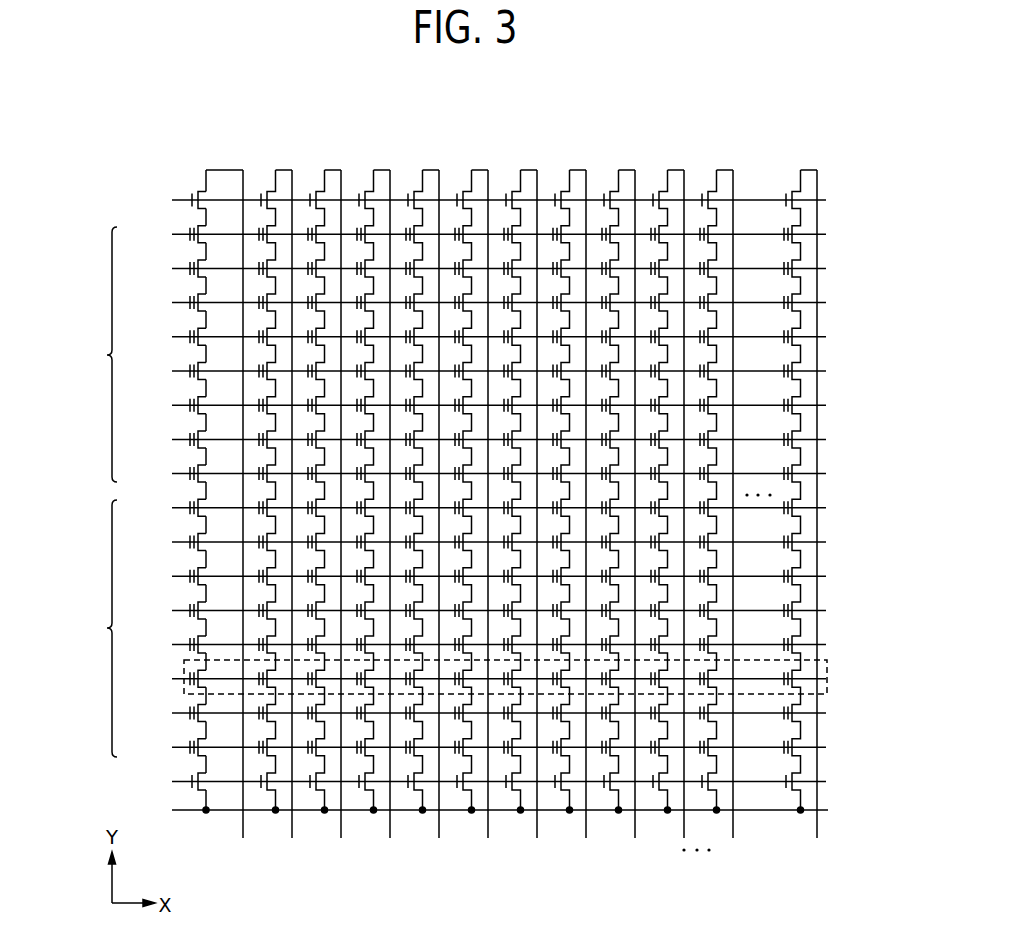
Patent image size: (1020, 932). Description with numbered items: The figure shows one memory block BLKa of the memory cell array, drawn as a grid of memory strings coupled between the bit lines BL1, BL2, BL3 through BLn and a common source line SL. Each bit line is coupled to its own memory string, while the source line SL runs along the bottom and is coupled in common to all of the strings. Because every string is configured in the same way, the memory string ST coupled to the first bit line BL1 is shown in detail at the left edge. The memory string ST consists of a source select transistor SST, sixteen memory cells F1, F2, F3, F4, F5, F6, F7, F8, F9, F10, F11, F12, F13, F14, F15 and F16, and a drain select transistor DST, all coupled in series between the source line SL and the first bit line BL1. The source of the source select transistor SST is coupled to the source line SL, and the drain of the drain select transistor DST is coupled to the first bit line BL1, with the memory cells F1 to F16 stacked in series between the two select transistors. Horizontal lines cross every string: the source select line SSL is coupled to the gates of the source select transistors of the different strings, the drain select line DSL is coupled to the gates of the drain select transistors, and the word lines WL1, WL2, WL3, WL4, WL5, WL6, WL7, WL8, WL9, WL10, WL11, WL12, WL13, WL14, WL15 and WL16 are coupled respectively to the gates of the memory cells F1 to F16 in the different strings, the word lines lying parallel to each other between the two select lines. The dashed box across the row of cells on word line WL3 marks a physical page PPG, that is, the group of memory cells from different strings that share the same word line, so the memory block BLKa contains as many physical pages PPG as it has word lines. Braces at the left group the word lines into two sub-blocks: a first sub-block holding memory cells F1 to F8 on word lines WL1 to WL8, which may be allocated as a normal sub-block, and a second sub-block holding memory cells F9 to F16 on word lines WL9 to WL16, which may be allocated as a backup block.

The memory string ST is at (238, 162).
The memory block BLKa is at (752, 140).
The drain select transistor DST is at (214, 191).
The source select transistor SST is at (214, 772).
The memory cell F1 is at (210, 738).
The memory cell F2 is at (211, 704).
The memory cell F3 is at (211, 669).
The memory cell F4 is at (211, 635).
The memory cell F5 is at (211, 601).
The memory cell F6 is at (211, 567).
The memory cell F7 is at (211, 533).
The memory cell F8 is at (211, 499).
The memory cell F9 is at (211, 465).
The memory cell F10 is at (213, 430).
The memory cell F11 is at (212, 396).
The memory cell F12 is at (213, 362).
The memory cell F13 is at (213, 328).
The memory cell F14 is at (213, 294).
The memory cell F15 is at (213, 259).
The memory cell F16 is at (213, 225).
The drain select line DSL is at (480, 200).
The source select line SSL is at (481, 782).
The source line SL is at (488, 810).
The word line WL1 is at (480, 747).
The word line WL2 is at (479, 713).
The word line WL3 is at (479, 679).
The word line WL4 is at (479, 645).
The word line WL5 is at (479, 610).
The word line WL6 is at (479, 576).
The word line WL7 is at (479, 542).
The word line WL8 is at (479, 508).
The word line WL9 is at (479, 474).
The word line WL10 is at (475, 439).
The word line WL11 is at (476, 405).
The word line WL12 is at (475, 371).
The word line WL13 is at (475, 337).
The word line WL14 is at (475, 303).
The word line WL15 is at (475, 268).
The word line WL16 is at (475, 234).
The first bit line BL1 is at (243, 517).
The bit line BL2 is at (293, 517).
The bit line BL3 is at (342, 517).
The bit line BLn is at (817, 517).
The physical page PPG is at (828, 672).